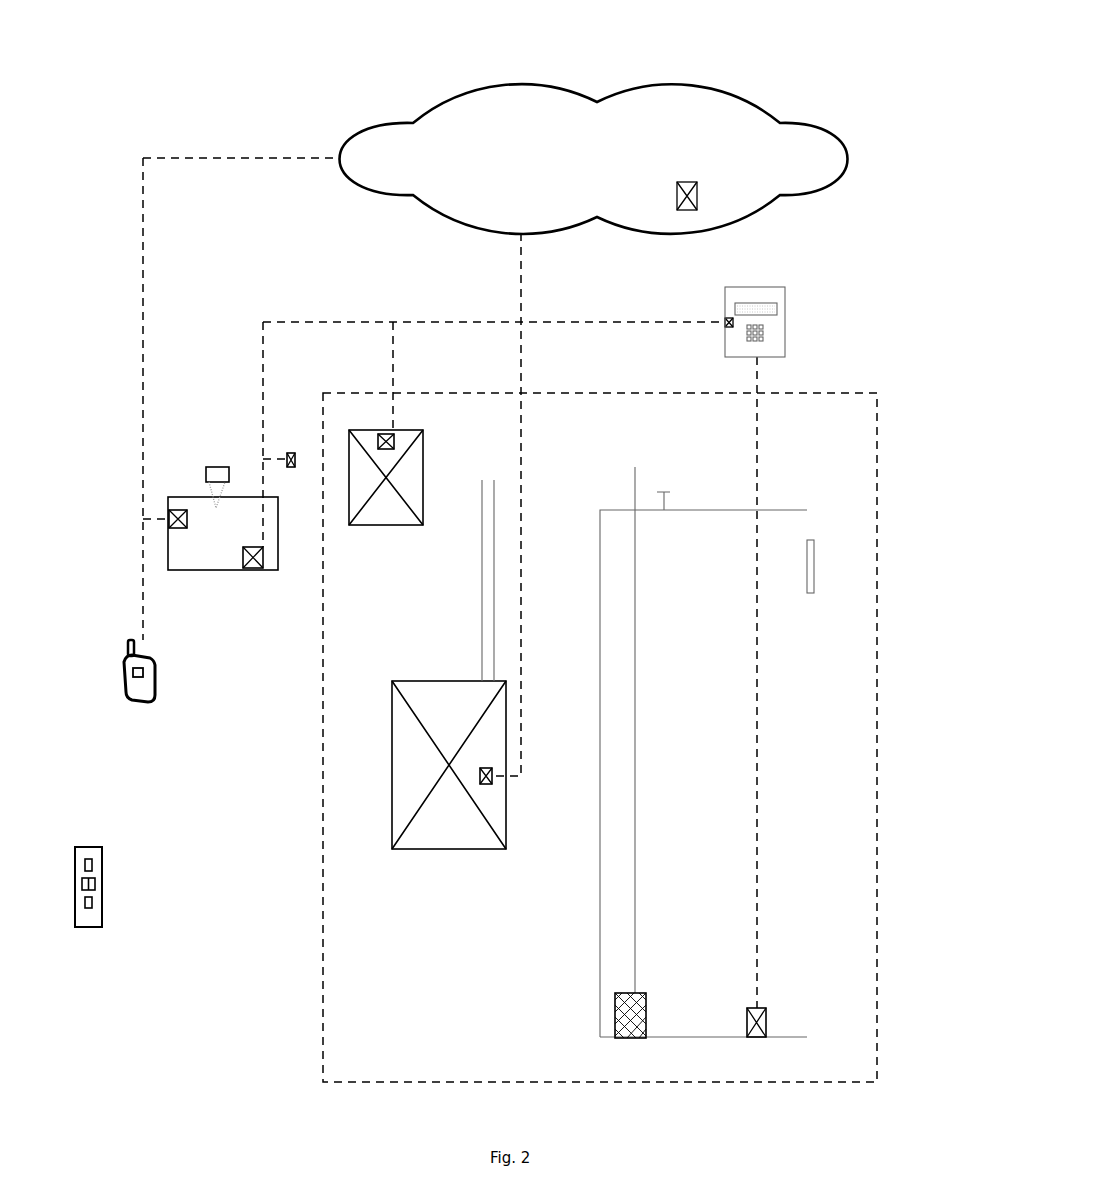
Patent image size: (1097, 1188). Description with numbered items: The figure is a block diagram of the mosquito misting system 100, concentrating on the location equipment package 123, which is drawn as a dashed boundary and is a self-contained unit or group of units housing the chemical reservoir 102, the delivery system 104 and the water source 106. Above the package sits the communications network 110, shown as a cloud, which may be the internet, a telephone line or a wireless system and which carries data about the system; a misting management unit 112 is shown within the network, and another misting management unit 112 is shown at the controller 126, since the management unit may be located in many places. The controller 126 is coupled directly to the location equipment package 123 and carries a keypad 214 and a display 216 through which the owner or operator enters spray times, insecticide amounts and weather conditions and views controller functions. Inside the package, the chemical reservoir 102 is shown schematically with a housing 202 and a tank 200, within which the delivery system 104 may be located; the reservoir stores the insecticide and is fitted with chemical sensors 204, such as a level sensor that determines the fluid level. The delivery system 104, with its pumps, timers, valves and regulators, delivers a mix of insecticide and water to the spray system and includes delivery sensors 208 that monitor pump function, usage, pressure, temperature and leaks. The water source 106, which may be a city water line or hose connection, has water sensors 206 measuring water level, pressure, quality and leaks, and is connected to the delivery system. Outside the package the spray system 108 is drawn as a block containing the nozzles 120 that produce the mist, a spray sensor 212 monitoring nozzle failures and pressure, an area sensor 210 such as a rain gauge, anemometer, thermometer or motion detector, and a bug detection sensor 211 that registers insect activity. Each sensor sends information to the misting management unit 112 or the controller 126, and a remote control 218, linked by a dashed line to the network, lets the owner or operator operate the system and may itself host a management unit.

The mosquito misting system 100 is at (823, 70).
The communications network 110 is at (653, 85).
The misting management unit 112 is at (690, 182).
The controller 126 is at (756, 287).
The display 216 is at (780, 307).
The keypad 214 is at (767, 333).
The location equipment package 123 is at (880, 410).
The nozzles 120 is at (212, 493).
The bug detection sensor 211 is at (185, 530).
The area sensors 210 is at (255, 570).
The spray system 108 is at (228, 467).
The spray sensors 212 is at (291, 453).
The remote control 218 is at (158, 676).
The delivery system 104 is at (400, 525).
The delivery sensors 208 is at (396, 445).
The water source 106 is at (405, 850).
The water sensors 206 is at (493, 783).
The housing 202 is at (878, 567).
The tank 200 is at (810, 655).
The chemical sensors 204 is at (815, 560).
The chemical reservoir 102 is at (806, 801).